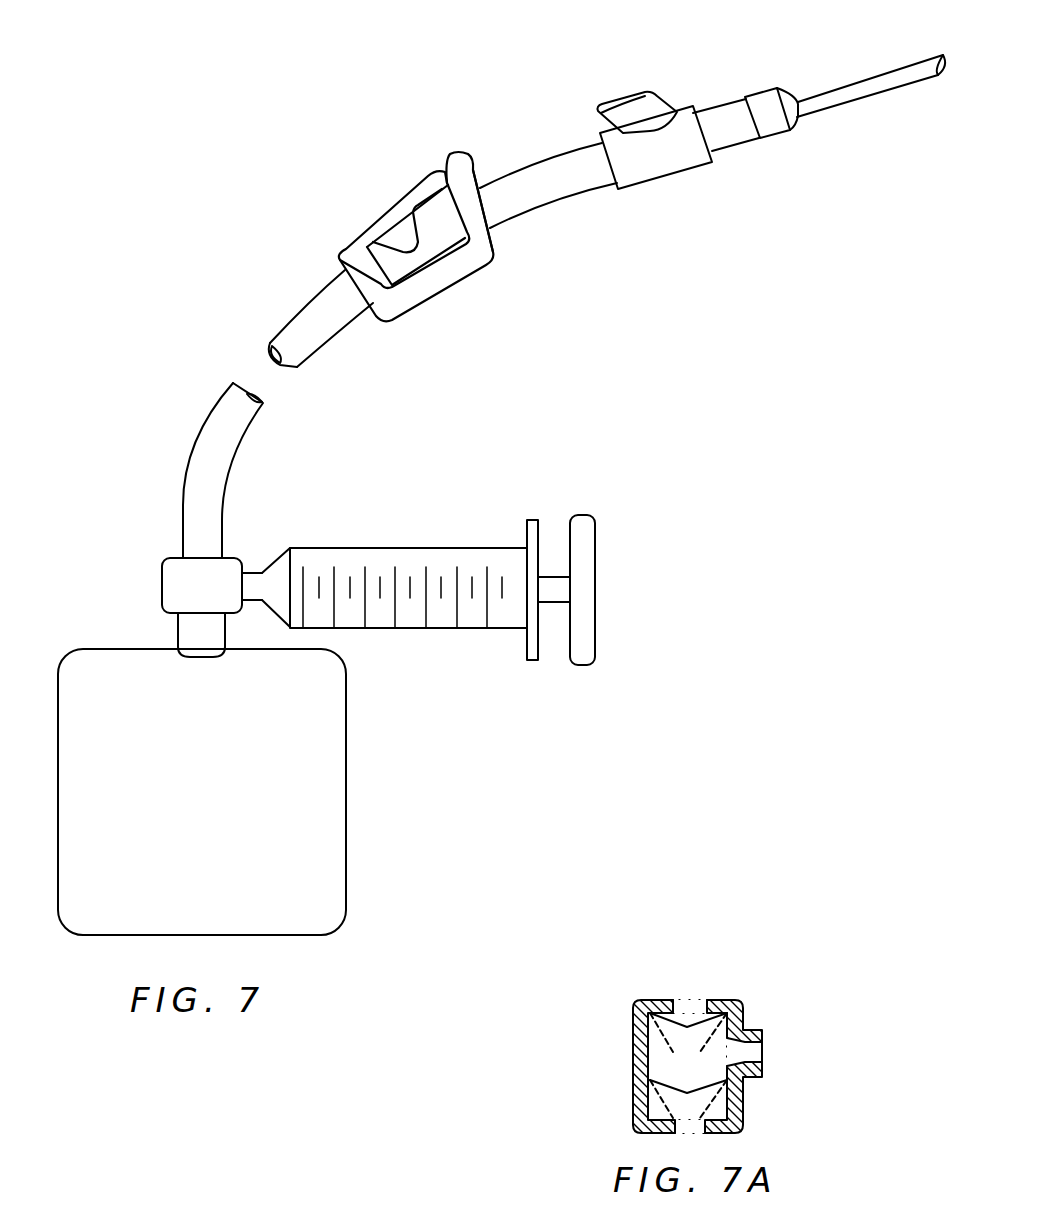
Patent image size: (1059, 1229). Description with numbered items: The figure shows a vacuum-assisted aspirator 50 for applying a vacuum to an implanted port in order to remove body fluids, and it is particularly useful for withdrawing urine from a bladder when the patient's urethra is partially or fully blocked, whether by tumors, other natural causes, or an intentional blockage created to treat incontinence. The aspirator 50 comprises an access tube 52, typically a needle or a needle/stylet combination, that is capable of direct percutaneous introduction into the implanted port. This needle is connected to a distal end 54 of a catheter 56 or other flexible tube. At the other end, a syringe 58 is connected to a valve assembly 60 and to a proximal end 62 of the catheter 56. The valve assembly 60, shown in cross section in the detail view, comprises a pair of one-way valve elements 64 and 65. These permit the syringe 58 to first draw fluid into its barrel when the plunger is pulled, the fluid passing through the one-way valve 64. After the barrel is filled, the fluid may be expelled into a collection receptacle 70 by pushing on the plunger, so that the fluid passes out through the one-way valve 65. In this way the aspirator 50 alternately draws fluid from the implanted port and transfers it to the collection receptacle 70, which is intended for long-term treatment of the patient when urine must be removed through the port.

In FIG. 7, the aspirator 50 is at (352, 127).
In FIG. 7, the access tube 52 is at (872, 82).
In FIG. 7, the distal end 54 is at (763, 90).
In FIG. 7, the catheter 56 is at (558, 183).
In FIG. 7, the syringe 58 is at (408, 562).
In FIG. 7, the valve assembly 60 is at (178, 588).
In FIG. 7A, the valve assembly 60 is at (743, 1108).
In FIG. 7, the proximal end 62 is at (159, 529).
In FIG. 7A, the one-way valve element 64 is at (680, 1038).
In FIG. 7A, the one-way valve element 65 is at (685, 1105).
In FIG. 7, the collection receptacle 70 is at (312, 750).